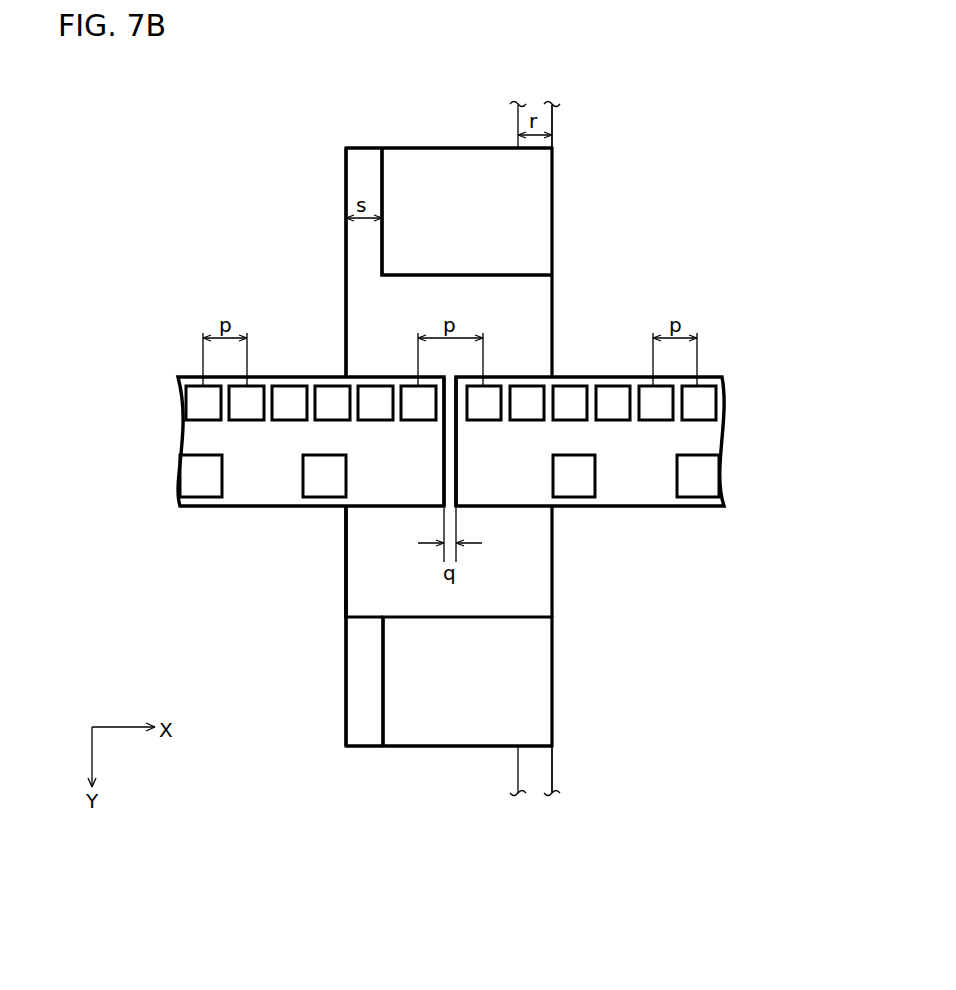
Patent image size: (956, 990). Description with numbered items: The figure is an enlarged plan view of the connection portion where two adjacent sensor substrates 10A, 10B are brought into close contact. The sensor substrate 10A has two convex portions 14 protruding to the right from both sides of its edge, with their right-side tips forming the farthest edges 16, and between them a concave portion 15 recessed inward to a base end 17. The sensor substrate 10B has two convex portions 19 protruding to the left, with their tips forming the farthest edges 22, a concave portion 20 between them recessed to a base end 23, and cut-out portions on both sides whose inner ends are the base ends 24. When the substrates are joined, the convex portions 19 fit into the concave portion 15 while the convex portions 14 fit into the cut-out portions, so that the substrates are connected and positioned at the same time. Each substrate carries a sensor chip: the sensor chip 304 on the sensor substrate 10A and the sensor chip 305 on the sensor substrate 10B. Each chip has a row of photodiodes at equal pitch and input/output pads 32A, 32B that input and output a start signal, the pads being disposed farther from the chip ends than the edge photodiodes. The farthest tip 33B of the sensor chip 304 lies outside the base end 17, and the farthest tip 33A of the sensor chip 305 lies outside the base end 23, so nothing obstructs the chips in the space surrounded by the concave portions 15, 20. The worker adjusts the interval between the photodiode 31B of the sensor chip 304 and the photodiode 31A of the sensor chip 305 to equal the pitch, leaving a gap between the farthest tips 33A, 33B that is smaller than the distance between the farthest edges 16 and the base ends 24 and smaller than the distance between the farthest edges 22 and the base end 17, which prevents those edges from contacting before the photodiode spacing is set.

The sensor substrate 10A is at (314, 337).
The sensor substrate 10B is at (587, 337).
The convex portion 14 is at (418, 132).
The farthest edge 16 is at (522, 104).
The convex portion 19 is at (452, 172).
The concave portion 20 is at (552, 570).
The farthest edge 22 is at (382, 188).
The base end 23 is at (552, 604).
The base end 24 is at (552, 122).
The concave portion 15 is at (363, 565).
The base end 17 is at (347, 612).
The sensor chip 304 is at (314, 438).
The sensor chip 305 is at (587, 438).
The photodiode 31A is at (487, 393).
The photodiode 31B is at (408, 393).
The input/output pad 32A is at (580, 500).
The input/output pad 32B is at (313, 492).
The farthest tip 33A is at (456, 482).
The farthest tip 33B is at (445, 465).